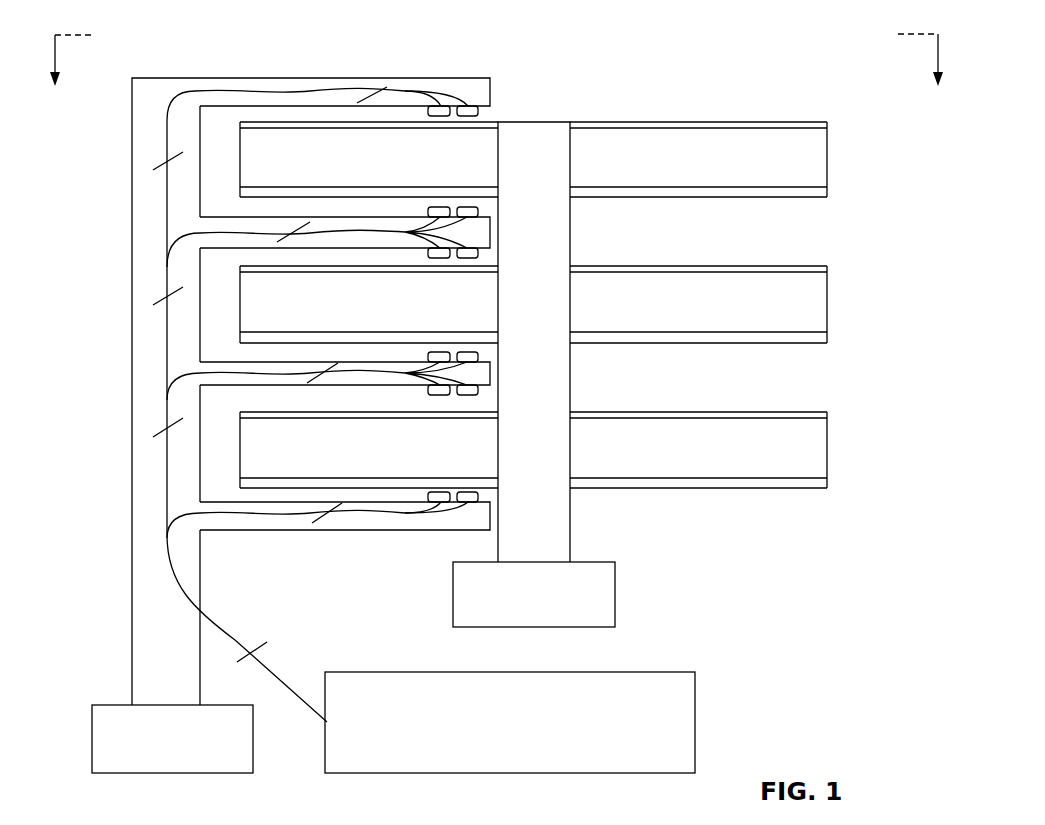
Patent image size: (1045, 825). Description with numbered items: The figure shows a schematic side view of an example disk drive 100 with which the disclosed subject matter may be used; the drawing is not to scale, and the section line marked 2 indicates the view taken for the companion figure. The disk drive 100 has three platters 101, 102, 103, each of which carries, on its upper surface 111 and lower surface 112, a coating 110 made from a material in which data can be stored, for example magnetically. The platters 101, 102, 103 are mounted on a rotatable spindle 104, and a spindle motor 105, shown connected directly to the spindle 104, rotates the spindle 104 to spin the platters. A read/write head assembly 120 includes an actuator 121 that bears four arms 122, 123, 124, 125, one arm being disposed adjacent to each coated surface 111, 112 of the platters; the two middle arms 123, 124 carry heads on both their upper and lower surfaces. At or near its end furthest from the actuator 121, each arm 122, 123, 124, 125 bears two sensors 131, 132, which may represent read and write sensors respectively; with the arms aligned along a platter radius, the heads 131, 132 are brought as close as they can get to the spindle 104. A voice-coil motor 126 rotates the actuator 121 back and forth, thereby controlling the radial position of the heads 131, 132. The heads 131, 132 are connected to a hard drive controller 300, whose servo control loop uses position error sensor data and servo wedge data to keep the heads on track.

The disk drive 100 is at (175, 38).
The section line for FIG. 2 is at (496, 78).
The platter 101 is at (827, 155).
The platter 102 is at (827, 299).
The platter 103 is at (827, 445).
The rotatable spindle 104 is at (540, 128).
The spindle motor 105 is at (615, 593).
The coating 110 is at (827, 125).
The upper surface 111 is at (647, 122).
The lower surface 112 is at (647, 197).
The read/write head assembly 120 is at (120, 212).
The actuator 121 is at (131, 314).
The arm 122 is at (310, 78).
The arm 123 is at (327, 216).
The arm 124 is at (327, 360).
The arm 125 is at (327, 502).
The voice-coil motor 126 is at (132, 705).
The sensor 131 is at (467, 118).
The sensor 132 is at (440, 118).
The hard drive controller 300 is at (394, 672).